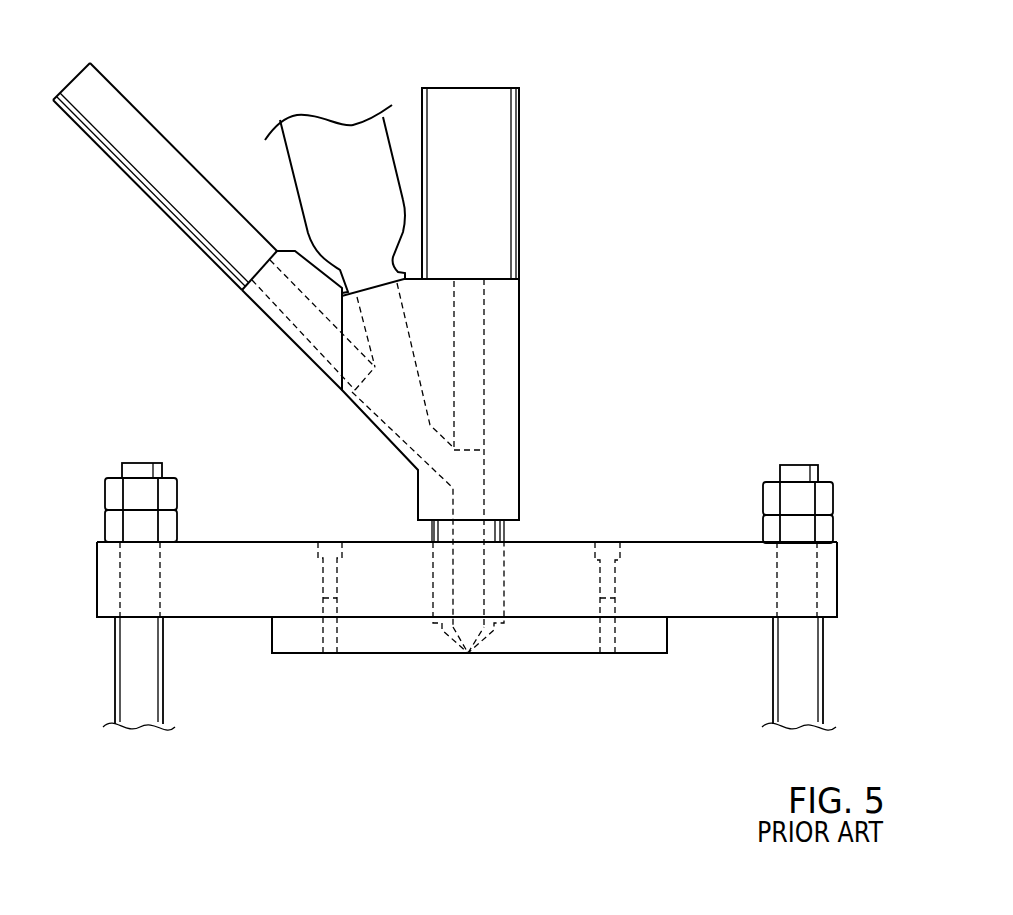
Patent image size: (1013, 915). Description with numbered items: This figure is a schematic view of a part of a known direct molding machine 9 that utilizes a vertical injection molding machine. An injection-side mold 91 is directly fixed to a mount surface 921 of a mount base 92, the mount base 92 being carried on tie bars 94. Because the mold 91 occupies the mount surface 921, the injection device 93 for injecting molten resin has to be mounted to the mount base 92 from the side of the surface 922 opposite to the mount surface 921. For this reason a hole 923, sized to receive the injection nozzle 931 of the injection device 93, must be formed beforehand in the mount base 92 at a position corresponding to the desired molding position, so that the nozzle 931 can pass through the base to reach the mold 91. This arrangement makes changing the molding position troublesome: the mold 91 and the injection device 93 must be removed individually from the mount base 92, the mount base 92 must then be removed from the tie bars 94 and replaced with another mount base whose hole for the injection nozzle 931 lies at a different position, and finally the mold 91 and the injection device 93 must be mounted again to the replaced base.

The direct molding machine 9 is at (622, 107).
The injection device 93 is at (535, 283).
The injection nozzle 931 is at (506, 535).
The injection-side mold 91 is at (518, 637).
The mount base 92 is at (230, 558).
The mount surface 921 is at (713, 622).
The surface opposite to the mount surface 922 is at (678, 543).
The hole 923 is at (436, 595).
The tie bars 94 is at (138, 675).